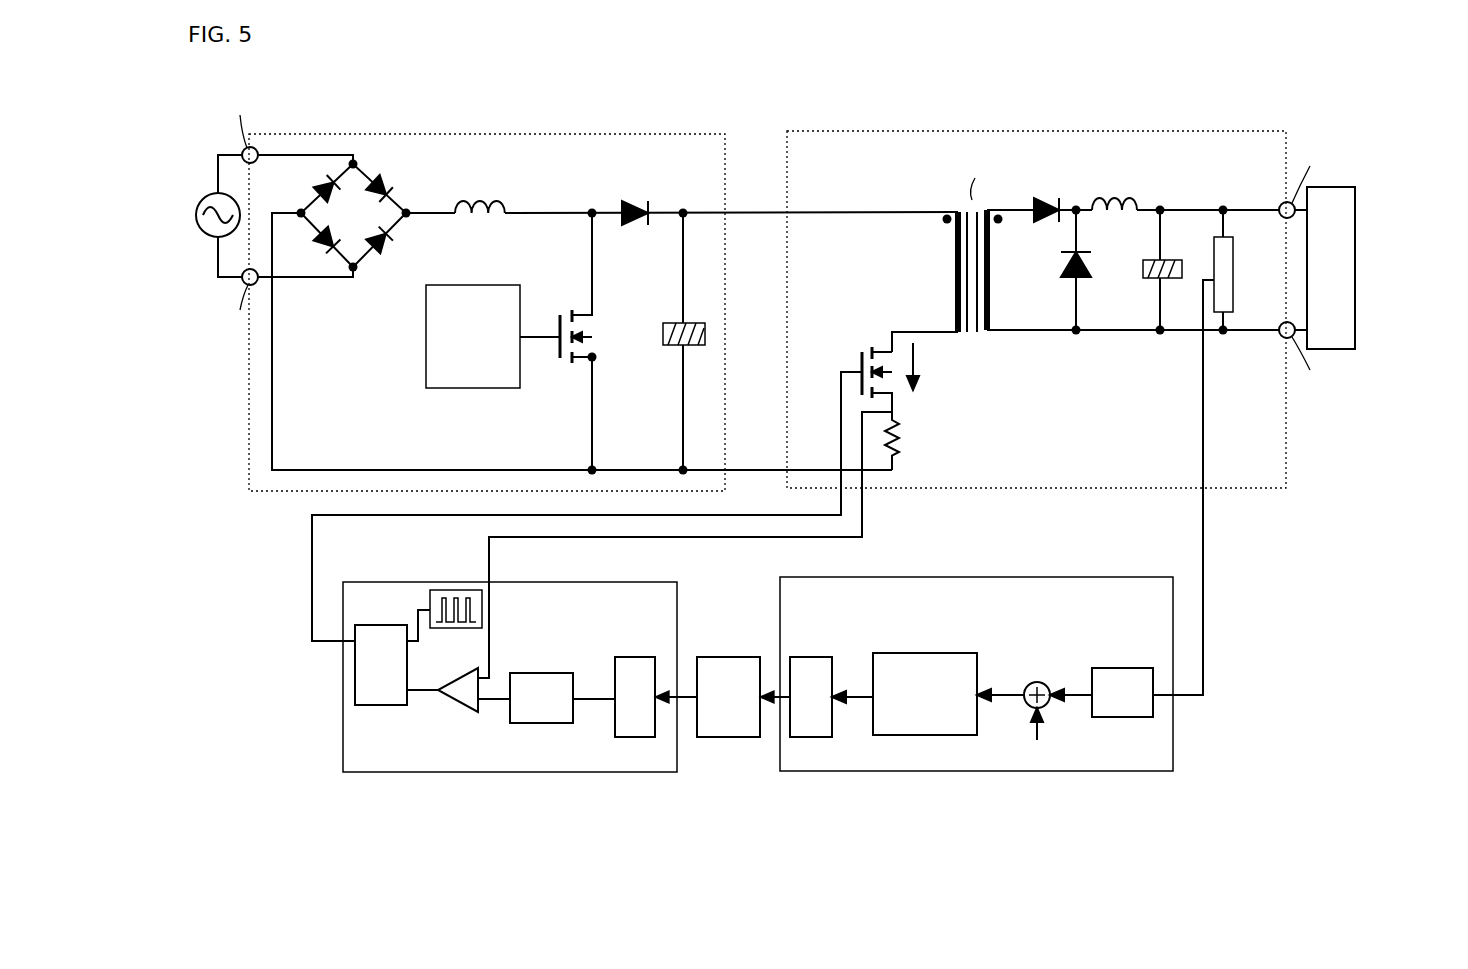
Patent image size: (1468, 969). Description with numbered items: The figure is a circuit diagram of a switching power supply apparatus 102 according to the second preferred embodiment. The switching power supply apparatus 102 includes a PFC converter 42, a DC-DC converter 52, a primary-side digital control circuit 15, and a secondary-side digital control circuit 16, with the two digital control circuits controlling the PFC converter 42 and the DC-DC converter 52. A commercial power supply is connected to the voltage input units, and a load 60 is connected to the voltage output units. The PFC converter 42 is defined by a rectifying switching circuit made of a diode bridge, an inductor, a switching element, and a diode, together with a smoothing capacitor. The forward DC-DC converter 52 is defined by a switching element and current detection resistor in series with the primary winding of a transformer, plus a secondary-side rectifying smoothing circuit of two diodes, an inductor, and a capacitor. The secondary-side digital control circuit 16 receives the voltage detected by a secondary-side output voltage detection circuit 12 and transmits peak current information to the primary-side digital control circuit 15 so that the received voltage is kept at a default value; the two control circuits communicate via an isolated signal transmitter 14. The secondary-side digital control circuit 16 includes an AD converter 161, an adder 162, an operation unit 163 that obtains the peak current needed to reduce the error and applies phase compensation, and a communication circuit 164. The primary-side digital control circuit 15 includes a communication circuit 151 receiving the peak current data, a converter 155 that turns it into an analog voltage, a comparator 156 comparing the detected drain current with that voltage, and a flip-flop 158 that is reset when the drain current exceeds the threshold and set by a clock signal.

The switching power supply apparatus 102 is at (1268, 66).
The PFC converter 42 is at (508, 134).
The DC-DC converter 52 is at (1065, 131).
The load 60 is at (1350, 187).
The secondary-side output voltage detection circuit 12 is at (1287, 500).
The primary-side digital control circuit 15 is at (683, 582).
The secondary-side digital control circuit 16 is at (988, 577).
The isolated signal transmitter 14 is at (727, 657).
The communication circuit 151 is at (630, 657).
The converter 155 is at (546, 673).
The comparator 156 is at (463, 675).
The flip-flop 158 is at (385, 705).
The AD converter 161 is at (1122, 668).
The adder 162 is at (1037, 682).
The operation unit 163 is at (926, 653).
The communication circuit 164 is at (806, 657).